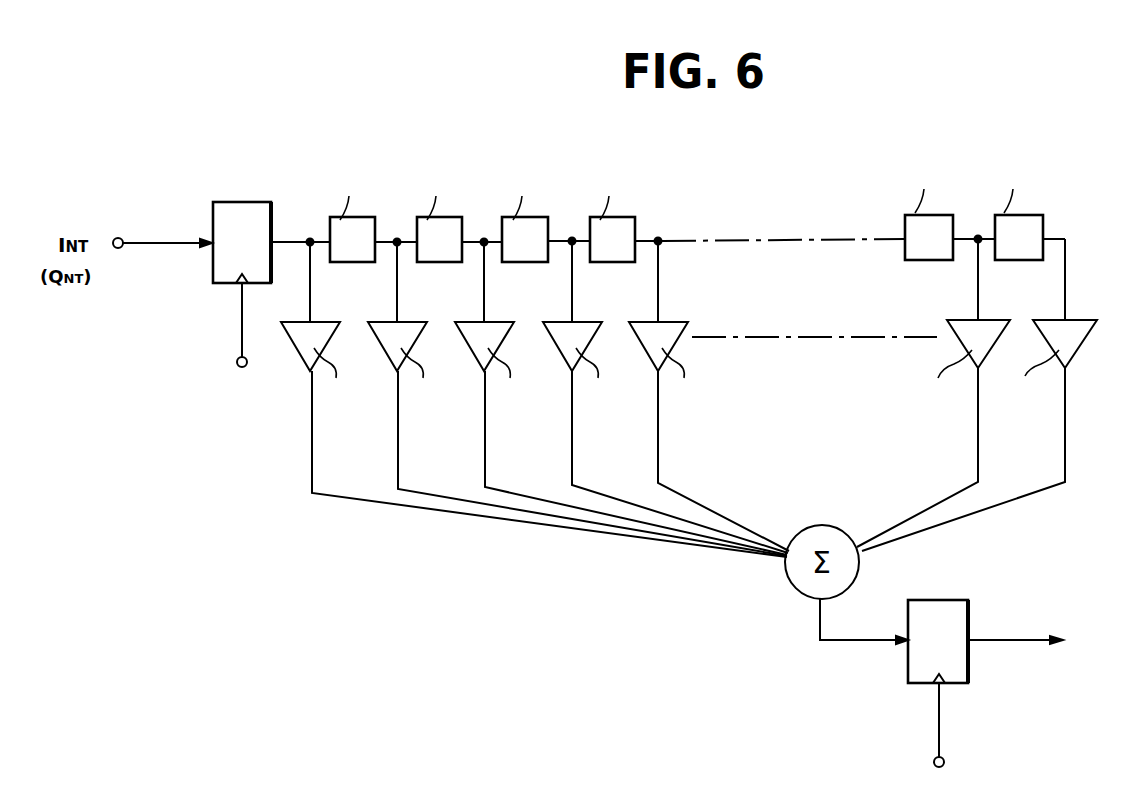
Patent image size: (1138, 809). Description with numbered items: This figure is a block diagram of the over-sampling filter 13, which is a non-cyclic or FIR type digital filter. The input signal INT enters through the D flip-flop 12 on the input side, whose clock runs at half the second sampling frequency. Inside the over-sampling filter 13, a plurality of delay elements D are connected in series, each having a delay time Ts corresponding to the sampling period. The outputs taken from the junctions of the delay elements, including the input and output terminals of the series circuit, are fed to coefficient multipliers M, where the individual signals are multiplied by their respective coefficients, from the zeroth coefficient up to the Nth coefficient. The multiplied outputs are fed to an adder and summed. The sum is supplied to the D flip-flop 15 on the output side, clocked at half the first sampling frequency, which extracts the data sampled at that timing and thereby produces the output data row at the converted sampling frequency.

The D flip-flop 12 is at (234, 208).
The over-sampling filter 13 is at (684, 357).
The D flip-flop 15 is at (938, 612).